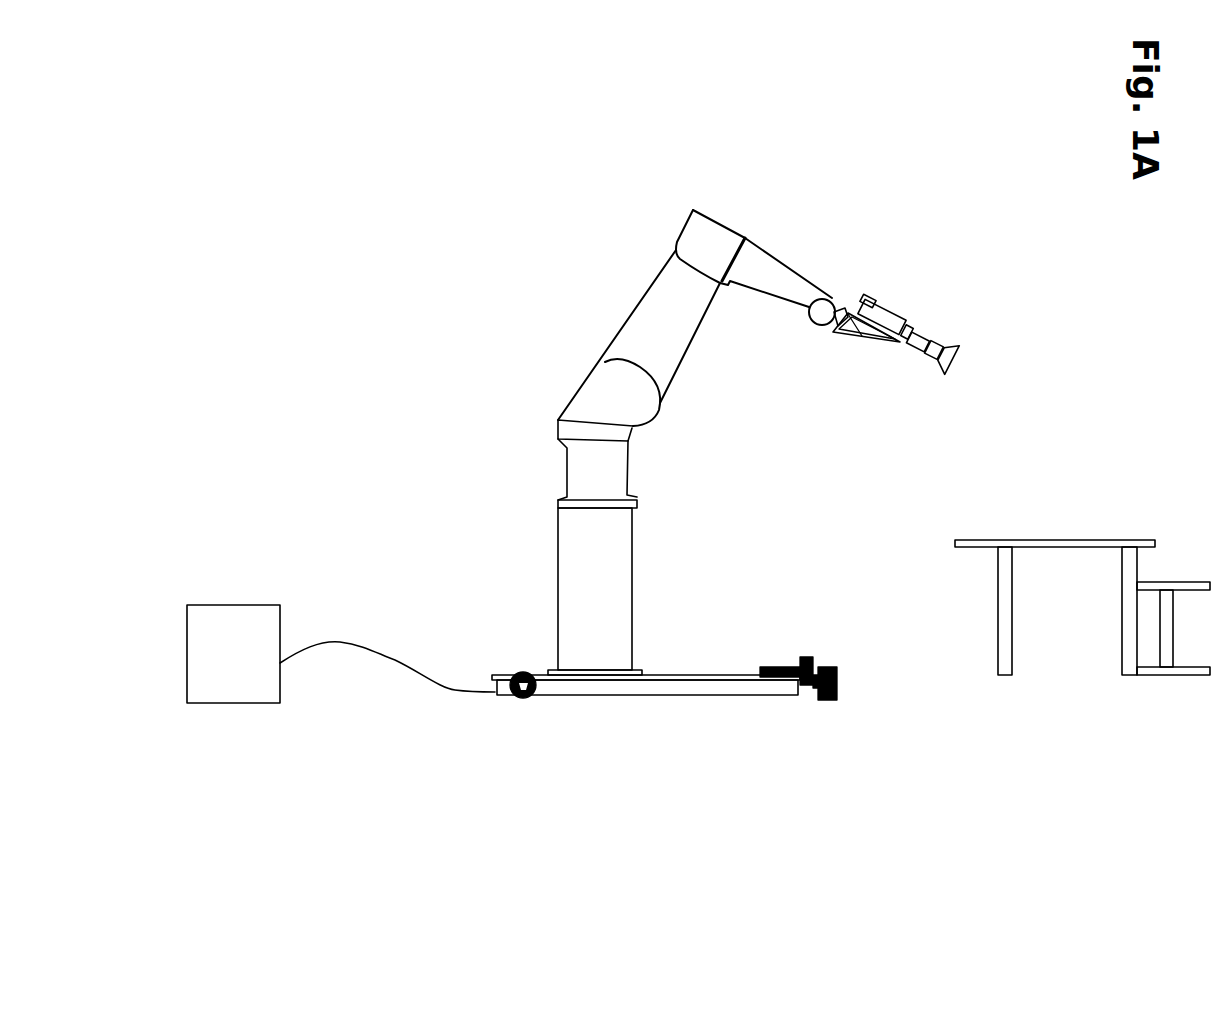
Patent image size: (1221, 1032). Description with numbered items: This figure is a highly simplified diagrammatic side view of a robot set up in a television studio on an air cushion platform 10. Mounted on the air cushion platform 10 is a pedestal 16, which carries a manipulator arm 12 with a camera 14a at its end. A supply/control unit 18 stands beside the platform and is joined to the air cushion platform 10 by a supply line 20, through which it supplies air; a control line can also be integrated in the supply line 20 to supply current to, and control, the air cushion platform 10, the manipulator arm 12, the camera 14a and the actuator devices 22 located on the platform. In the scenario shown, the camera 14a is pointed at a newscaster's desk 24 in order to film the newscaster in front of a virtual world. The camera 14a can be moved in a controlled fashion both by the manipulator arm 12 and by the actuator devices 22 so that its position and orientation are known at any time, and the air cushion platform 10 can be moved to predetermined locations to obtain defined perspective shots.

The air cushion platform 10 is at (750, 652).
The manipulator arm 12 is at (780, 213).
The camera 14a is at (908, 310).
The pedestal 16 is at (627, 537).
The supply/control unit 18 is at (252, 618).
The supply line 20 is at (385, 653).
The actuator devices 22 is at (813, 660).
The newscaster's desk 24 is at (1082, 517).